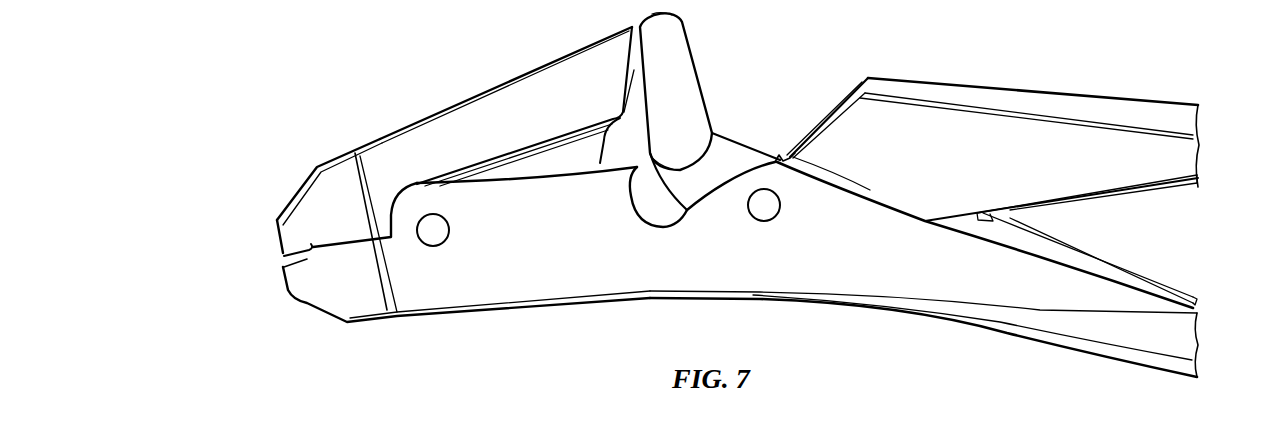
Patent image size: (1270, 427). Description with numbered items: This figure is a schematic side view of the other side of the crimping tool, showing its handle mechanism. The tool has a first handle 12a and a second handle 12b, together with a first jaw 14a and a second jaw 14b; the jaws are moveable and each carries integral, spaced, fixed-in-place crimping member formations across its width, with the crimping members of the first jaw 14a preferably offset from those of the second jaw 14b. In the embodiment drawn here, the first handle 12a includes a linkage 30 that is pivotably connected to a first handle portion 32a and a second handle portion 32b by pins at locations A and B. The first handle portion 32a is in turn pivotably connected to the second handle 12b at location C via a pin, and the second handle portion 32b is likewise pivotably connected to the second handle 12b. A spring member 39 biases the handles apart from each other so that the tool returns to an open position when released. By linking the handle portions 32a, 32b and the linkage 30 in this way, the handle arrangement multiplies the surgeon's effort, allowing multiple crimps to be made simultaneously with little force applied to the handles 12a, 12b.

The first handle 12a is at (1072, 105).
The second handle 12b is at (1032, 335).
The first jaw 14a is at (285, 203).
The second jaw 14b is at (313, 307).
The linkage 30 is at (692, 55).
The first handle portion 32a is at (723, 147).
The second handle portion 32b is at (477, 100).
The spring member 39 is at (1037, 221).
The pin location A is at (668, 154).
The pin location B is at (662, 32).
The pin location C is at (767, 208).